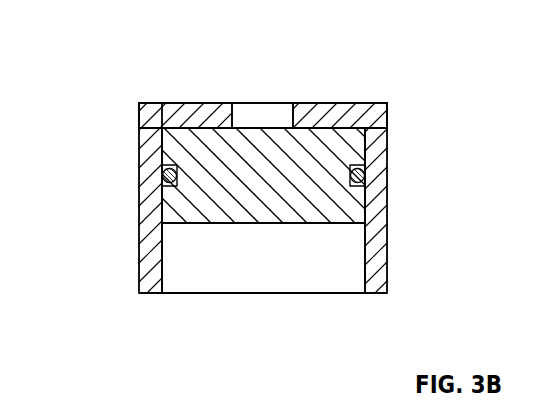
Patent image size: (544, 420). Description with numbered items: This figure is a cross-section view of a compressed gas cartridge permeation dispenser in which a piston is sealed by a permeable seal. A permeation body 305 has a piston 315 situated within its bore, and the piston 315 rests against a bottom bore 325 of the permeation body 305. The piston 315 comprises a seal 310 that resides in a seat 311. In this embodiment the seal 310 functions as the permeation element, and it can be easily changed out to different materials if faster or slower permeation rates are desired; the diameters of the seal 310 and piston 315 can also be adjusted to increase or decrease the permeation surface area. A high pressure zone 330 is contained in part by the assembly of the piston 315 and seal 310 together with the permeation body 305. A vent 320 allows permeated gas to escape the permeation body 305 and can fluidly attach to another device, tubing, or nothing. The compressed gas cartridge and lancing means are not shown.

The permeation body 305 is at (380, 162).
The seal 310 is at (163, 171).
The seat 311 is at (168, 156).
The piston 315 is at (222, 190).
The vent 320 is at (266, 110).
The bottom bore 325 is at (197, 127).
The high pressure zone 330 is at (247, 265).